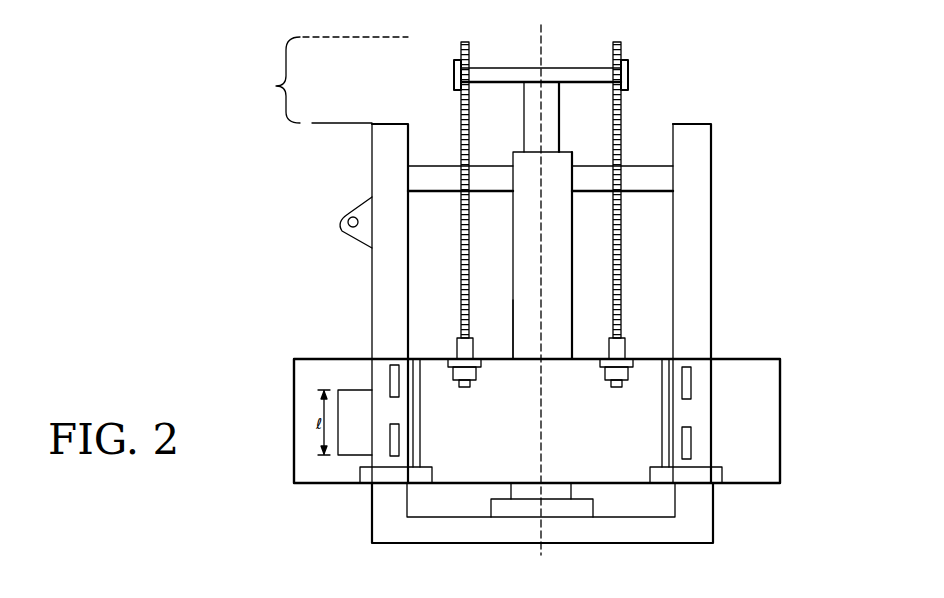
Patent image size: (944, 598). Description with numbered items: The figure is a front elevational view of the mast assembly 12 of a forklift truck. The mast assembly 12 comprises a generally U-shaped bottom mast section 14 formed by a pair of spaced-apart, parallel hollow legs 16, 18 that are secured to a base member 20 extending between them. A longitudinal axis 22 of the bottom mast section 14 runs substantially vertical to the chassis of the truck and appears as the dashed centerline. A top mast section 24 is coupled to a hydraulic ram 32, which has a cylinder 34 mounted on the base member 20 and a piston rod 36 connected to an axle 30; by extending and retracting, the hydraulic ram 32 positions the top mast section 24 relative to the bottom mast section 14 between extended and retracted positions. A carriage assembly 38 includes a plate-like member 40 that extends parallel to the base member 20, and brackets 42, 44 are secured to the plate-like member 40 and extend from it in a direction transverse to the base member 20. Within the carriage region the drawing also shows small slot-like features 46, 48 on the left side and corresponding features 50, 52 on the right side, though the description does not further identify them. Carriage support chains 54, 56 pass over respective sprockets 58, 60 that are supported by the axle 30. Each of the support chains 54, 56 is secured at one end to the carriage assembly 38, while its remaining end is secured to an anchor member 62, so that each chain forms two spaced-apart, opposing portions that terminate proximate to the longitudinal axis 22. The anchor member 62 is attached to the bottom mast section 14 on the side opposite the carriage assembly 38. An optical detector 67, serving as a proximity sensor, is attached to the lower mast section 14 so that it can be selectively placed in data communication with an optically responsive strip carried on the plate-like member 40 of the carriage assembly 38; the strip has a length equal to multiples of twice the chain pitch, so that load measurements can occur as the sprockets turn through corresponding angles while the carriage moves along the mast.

The mast assembly 12 is at (352, 145).
The bottom mast section 14 is at (690, 548).
The hollow leg 16 is at (393, 322).
The hollow leg 18 is at (688, 252).
The base member 20 is at (406, 527).
The longitudinal axis 22 is at (541, 33).
The top mast section 24 is at (327, 80).
The axle 30 is at (484, 67).
The hydraulic ram 32 is at (501, 277).
The cylinder 34 is at (555, 280).
The piston rod 36 is at (548, 122).
The carriage assembly 38 is at (791, 439).
The plate-like member 40 is at (762, 396).
The bracket 42 is at (417, 360).
The bracket 44 is at (665, 360).
The upper left slot 46 is at (390, 390).
The lower left slot 48 is at (394, 440).
The upper right slot 50 is at (685, 385).
The lower right slot 52 is at (686, 447).
The carriage support chain 54 is at (462, 258).
The carriage support chain 56 is at (618, 200).
The sprocket 58 is at (461, 50).
The sprocket 60 is at (621, 50).
The anchor member 62 is at (650, 180).
The optical detector 67 is at (348, 230).